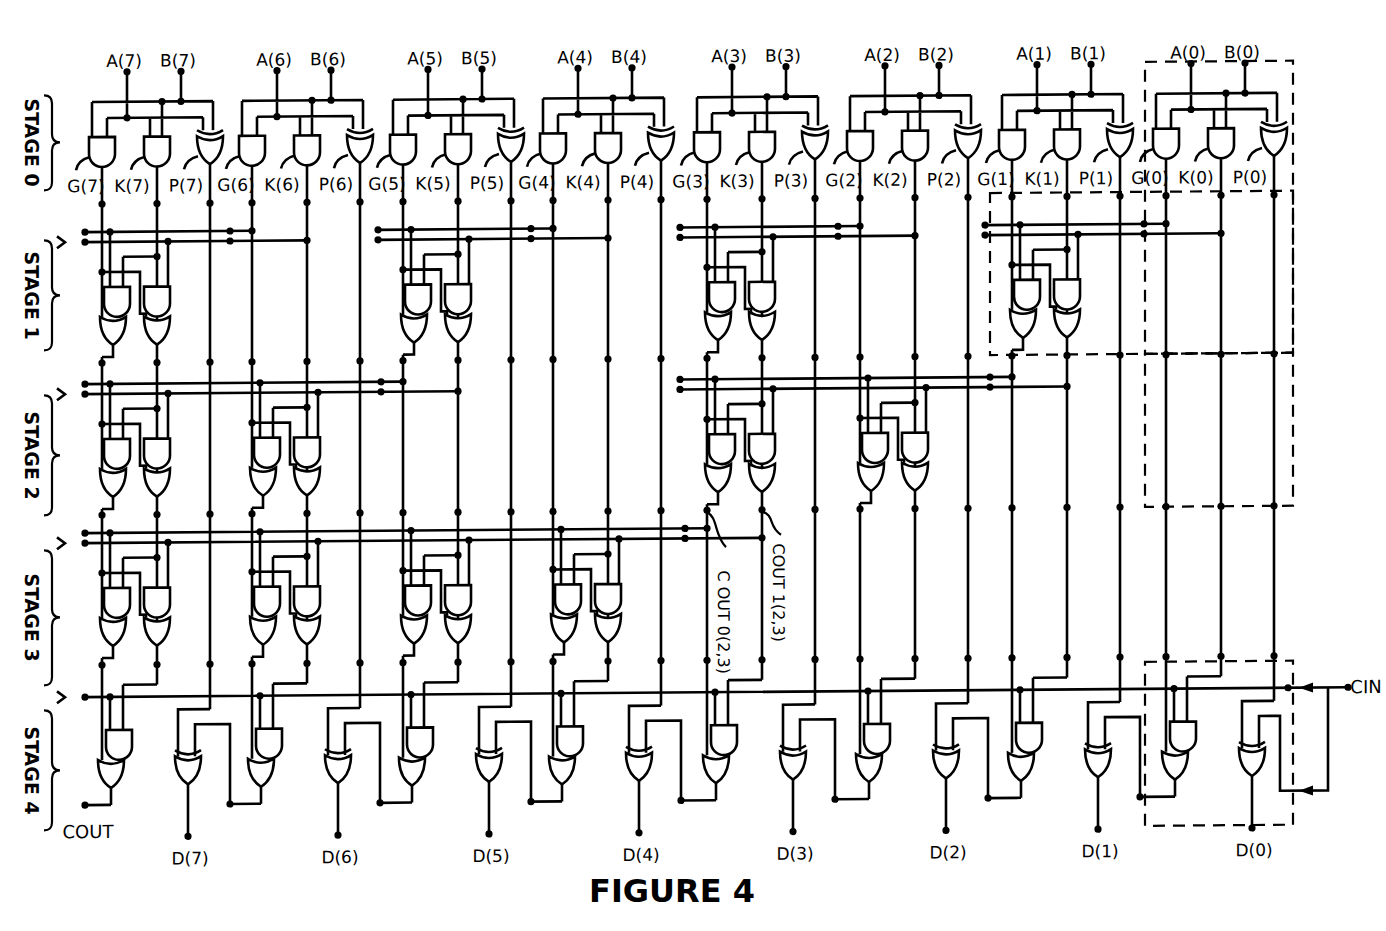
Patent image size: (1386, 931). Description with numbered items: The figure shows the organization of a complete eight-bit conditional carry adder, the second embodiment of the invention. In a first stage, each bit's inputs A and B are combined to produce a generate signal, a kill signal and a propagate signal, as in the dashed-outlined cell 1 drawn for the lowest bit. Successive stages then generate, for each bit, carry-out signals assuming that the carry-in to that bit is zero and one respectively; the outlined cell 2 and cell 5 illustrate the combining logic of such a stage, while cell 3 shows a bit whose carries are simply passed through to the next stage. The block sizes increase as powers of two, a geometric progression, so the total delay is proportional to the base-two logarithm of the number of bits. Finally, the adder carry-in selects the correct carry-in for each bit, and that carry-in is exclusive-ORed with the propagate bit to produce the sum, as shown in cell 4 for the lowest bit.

The cell 1 (bit 0 generate/kill/propagate stage) 1 is at (1294, 62).
The cell 2 (stage 1 carry combining cell) 2 is at (1265, 342).
The cell 3 (carry pass-through cell) 3 is at (1265, 502).
The cell 4 (sum output cell) 4 is at (1215, 665).
The cell 5 (carry combining cell) 5 is at (1077, 362).